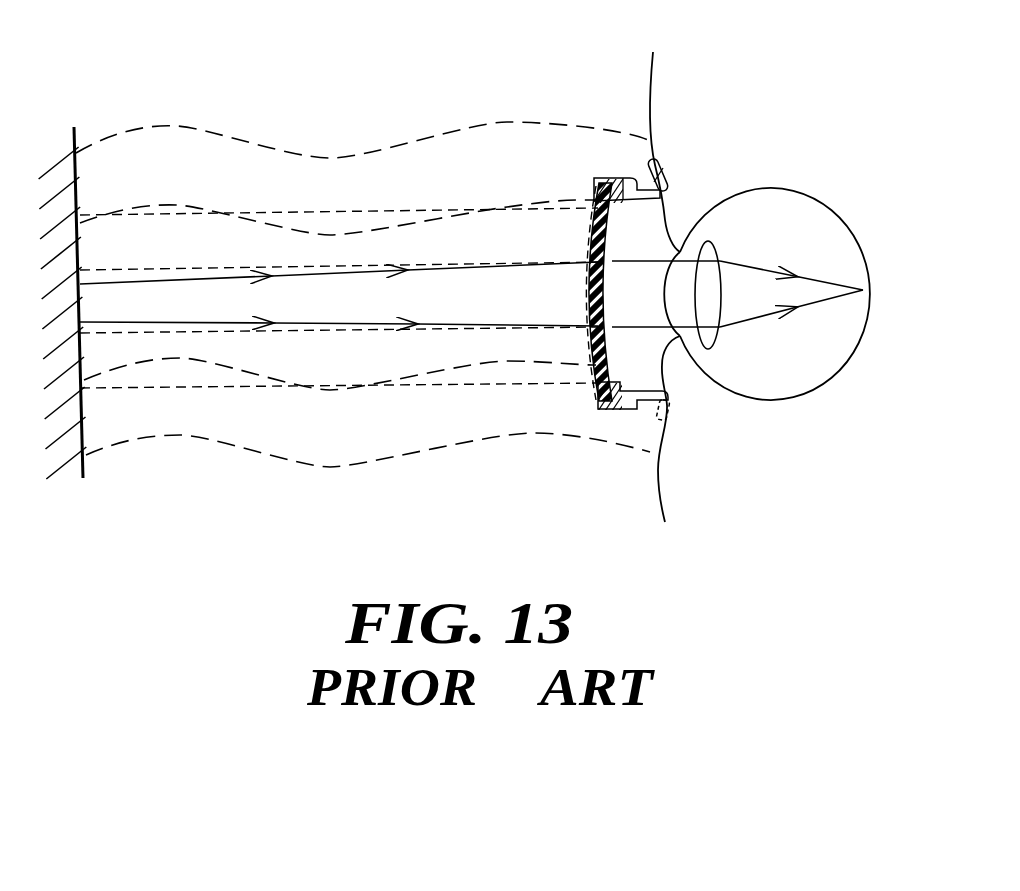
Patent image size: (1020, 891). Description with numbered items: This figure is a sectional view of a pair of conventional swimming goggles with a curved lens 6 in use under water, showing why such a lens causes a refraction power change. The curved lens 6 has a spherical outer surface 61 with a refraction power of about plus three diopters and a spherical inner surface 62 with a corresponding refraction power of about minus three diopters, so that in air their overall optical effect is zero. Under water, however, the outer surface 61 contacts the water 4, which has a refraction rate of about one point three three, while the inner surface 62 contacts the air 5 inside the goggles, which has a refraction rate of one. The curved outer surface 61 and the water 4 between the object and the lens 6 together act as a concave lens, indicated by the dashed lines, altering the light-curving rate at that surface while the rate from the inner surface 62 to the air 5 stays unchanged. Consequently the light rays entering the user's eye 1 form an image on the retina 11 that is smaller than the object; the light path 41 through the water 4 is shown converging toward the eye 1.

The eye 1 is at (780, 213).
The retina 11 is at (837, 222).
The water 4 is at (483, 162).
The light beam 41 is at (548, 302).
The air 5 is at (636, 238).
The curved lens 6 is at (597, 385).
The outer surface 61 is at (597, 353).
The inner surface 62 is at (670, 397).